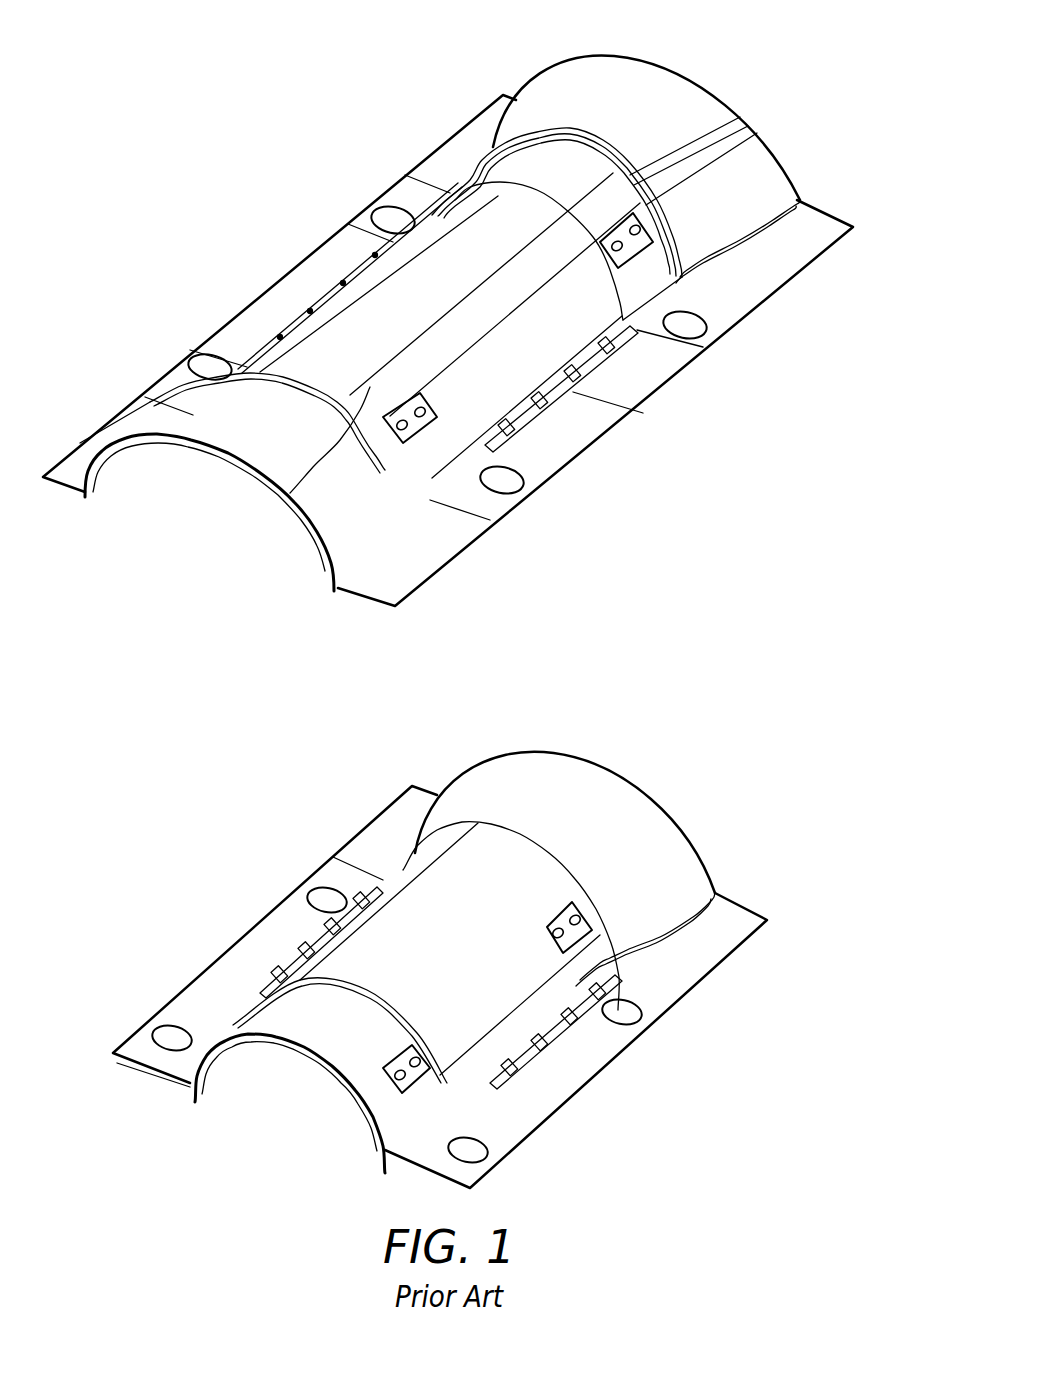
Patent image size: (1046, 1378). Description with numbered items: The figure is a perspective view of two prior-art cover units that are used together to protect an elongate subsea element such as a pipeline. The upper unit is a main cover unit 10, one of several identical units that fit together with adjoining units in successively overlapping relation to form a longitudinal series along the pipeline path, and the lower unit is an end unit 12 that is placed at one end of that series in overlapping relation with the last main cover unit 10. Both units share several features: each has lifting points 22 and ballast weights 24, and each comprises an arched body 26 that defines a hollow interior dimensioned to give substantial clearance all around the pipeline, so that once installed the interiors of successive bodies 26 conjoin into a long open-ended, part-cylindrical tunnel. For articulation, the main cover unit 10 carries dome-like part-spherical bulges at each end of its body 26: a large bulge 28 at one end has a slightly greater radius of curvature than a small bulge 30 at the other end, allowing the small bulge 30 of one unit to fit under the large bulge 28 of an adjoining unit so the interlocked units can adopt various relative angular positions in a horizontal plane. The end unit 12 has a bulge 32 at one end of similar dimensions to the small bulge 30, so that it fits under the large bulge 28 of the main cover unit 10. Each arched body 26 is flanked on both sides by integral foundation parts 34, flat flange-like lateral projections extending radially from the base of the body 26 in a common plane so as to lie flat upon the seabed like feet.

The main cover unit 10 is at (217, 299).
The end unit 12 is at (278, 861).
The lifting points 22 is at (622, 232).
The ballast weights 24 is at (597, 360).
The arched body 26 is at (387, 290).
The large bulge 28 is at (223, 440).
The small bulge 30 is at (648, 72).
The bulge 32 is at (547, 757).
The foundation parts 34 is at (430, 160).